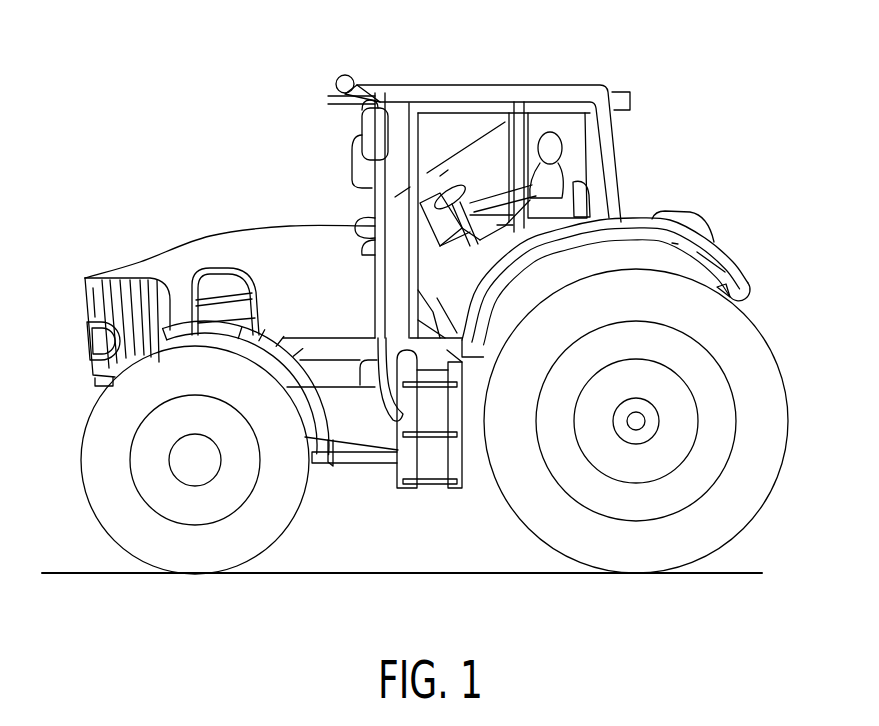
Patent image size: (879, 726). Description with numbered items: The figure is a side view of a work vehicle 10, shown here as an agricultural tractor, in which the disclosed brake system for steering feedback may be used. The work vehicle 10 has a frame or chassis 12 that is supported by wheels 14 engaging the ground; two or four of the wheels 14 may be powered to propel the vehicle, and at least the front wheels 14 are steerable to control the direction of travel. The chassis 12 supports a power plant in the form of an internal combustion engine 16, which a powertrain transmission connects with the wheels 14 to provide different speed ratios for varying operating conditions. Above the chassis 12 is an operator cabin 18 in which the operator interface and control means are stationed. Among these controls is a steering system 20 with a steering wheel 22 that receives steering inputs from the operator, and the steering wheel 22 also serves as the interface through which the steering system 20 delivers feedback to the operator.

The work vehicle 10 is at (603, 65).
The chassis 12 is at (311, 455).
The wheels 14 is at (180, 466).
The engine 16 is at (178, 272).
The operator cabin 18 is at (452, 98).
The steering system 20 is at (435, 213).
The steering wheel 22 is at (458, 204).